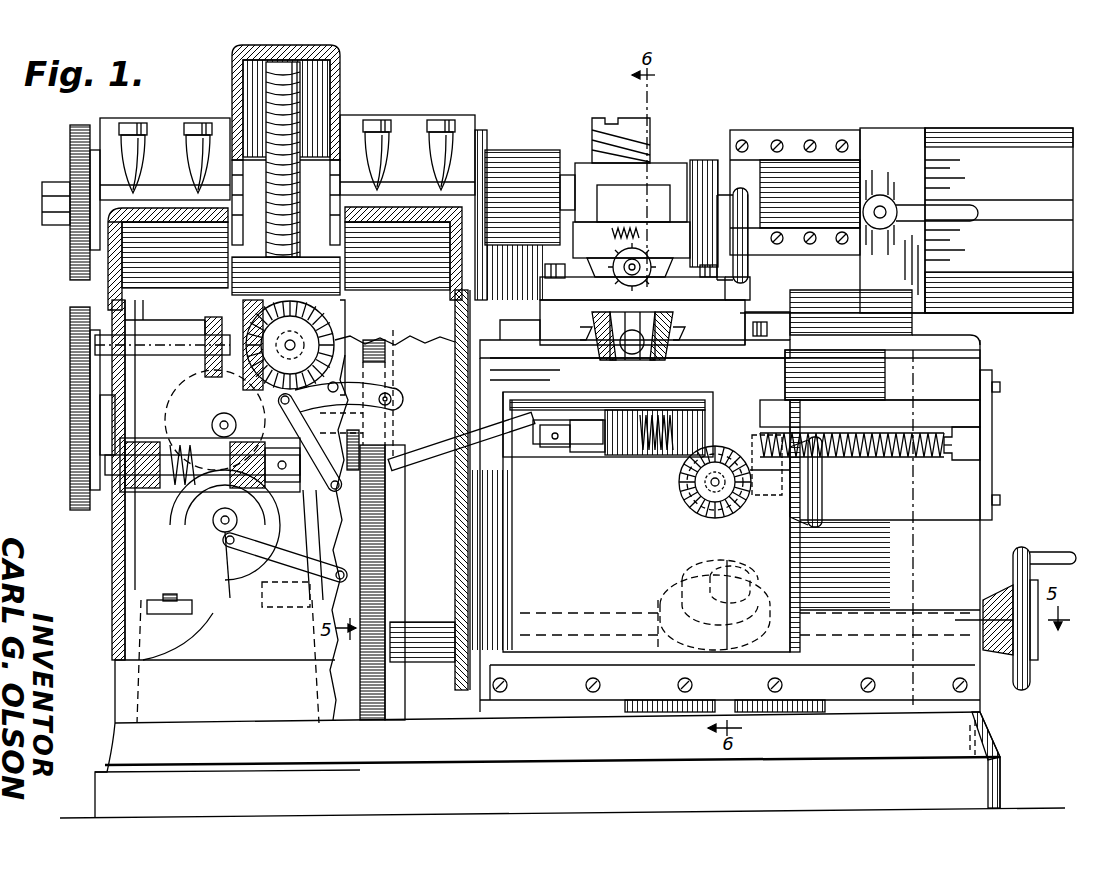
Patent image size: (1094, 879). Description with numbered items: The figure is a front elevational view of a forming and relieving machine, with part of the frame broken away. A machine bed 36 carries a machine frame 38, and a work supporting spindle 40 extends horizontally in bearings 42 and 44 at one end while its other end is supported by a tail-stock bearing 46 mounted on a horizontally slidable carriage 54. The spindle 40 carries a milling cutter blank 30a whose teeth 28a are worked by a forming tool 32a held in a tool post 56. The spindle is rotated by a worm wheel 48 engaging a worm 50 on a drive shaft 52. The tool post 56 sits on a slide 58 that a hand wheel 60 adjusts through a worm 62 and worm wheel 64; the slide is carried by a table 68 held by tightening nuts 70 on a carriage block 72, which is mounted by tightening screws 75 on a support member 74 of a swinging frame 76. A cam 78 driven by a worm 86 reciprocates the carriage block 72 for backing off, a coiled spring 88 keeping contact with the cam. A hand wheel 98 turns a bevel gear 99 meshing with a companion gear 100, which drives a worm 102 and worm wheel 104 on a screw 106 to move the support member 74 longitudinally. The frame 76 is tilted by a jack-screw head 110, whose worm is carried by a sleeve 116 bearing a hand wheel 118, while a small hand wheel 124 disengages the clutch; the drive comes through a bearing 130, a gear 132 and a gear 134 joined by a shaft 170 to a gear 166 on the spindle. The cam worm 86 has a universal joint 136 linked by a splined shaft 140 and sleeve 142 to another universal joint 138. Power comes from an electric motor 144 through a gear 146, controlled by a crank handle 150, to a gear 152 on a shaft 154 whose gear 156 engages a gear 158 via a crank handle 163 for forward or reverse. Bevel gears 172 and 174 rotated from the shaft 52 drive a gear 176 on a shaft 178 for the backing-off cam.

The machine bed 36 is at (998, 752).
The machine frame 38 is at (115, 540).
The work or cutter supporting spindle 40 is at (723, 155).
The bearing 42 is at (163, 133).
The bearing 44 is at (398, 125).
The tail-stock bearing 46 is at (790, 173).
The worm wheel 48 is at (332, 58).
The worm 50 is at (336, 312).
The drive shaft 52 is at (350, 325).
The horizontally slidable carriage 54 is at (895, 150).
The tool post 56 is at (666, 165).
The slide 58 is at (578, 258).
The hand wheel 60 is at (752, 288).
The worm 62 is at (625, 228).
The worm wheel 64 is at (660, 275).
The guide block or table 68 is at (772, 303).
The tightening nuts 70 is at (545, 272).
The carriage block 72 is at (550, 350).
The support member 74 is at (775, 372).
The tightening screws 75 is at (460, 312).
The swinging frame 76 is at (580, 600).
The cam 78 is at (680, 327).
The worm 86 is at (640, 440).
The coiled spring 88 is at (610, 395).
The hand wheel 98 is at (823, 515).
The bevel gear 99 is at (720, 500).
The companion gear 100 is at (705, 500).
The worm 102 is at (700, 478).
The worm wheel 104 is at (785, 405).
The screw 106 is at (915, 457).
The head 110 is at (682, 577).
The sleeve 116 is at (862, 612).
The hand wheel 118 is at (1020, 548).
The small hand wheel 124 is at (1035, 655).
The bearing 130 is at (420, 652).
The gear 132 is at (385, 575).
The gear 134 is at (385, 525).
The universal connection or joint 136 is at (525, 447).
The universal joint 138 is at (304, 520).
The splined shaft 140 is at (300, 490).
The sleeve 142 is at (425, 440).
The electric motor 144 is at (160, 555).
The gear 146 is at (243, 603).
The crank handle 150 is at (265, 605).
The gear 152 is at (85, 398).
The shaft 154 is at (224, 414).
The gear 156 is at (193, 383).
The gear 158 is at (198, 300).
The crank handle 163 is at (312, 412).
The gear 166 is at (68, 140).
The shaft 170 is at (105, 420).
The bevel gear 172 is at (365, 342).
The bevel gear 174 is at (222, 285).
The gear 176 is at (82, 470).
The shaft 178 is at (113, 487).
The teeth 28a is at (650, 140).
The milling cutter blank 30a is at (618, 122).
The forming tool 32a is at (575, 195).